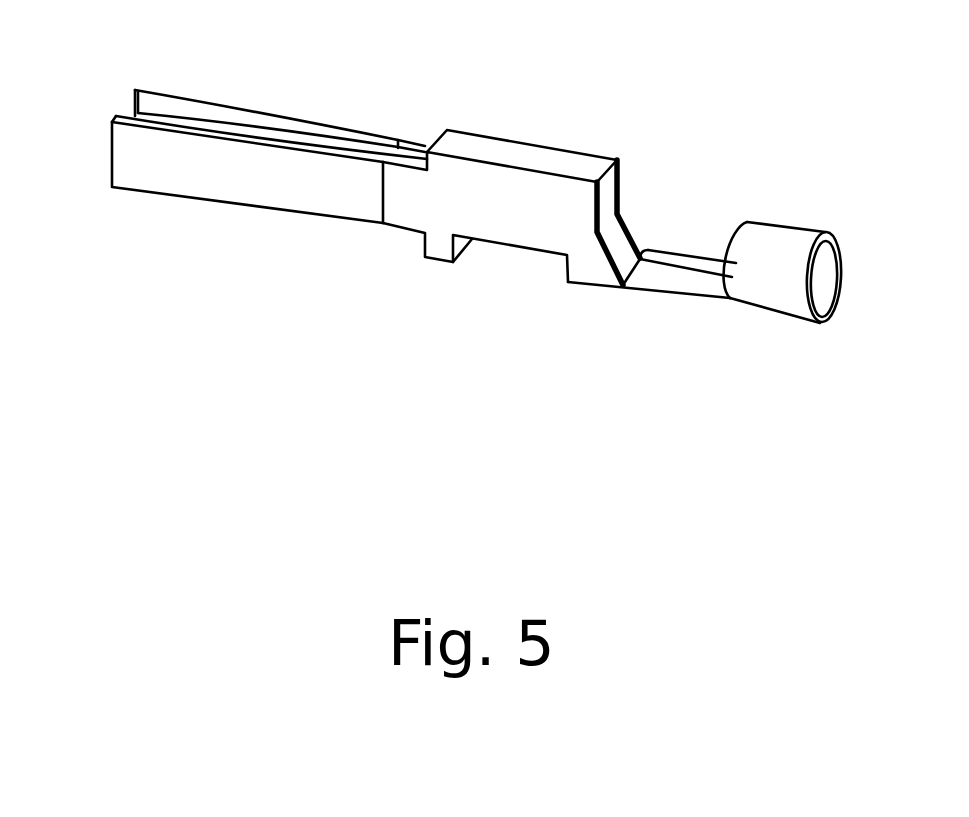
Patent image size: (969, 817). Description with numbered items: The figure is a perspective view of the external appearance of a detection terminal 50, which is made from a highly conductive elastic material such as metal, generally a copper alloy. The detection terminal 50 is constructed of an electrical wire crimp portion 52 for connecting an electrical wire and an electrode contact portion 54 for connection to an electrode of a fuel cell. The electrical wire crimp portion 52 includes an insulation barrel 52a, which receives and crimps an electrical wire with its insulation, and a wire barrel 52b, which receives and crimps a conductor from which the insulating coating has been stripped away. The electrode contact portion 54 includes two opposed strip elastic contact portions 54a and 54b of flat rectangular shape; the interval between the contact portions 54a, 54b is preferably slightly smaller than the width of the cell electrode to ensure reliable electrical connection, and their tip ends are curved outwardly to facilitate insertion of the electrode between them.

The detection terminal 50 is at (508, 467).
The electrical wire crimp portion 52 is at (847, 352).
The insulation barrel 52a is at (786, 234).
The wire barrel 52b is at (667, 248).
The electrode contact portion 54 is at (405, 277).
The contact portion 54a is at (127, 116).
The contact portion 54b is at (149, 117).